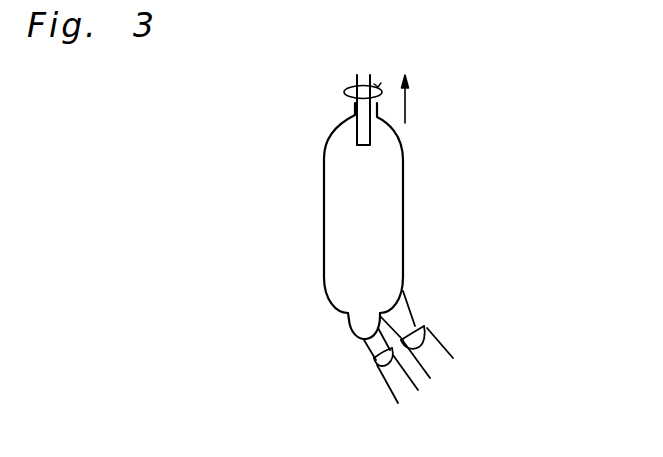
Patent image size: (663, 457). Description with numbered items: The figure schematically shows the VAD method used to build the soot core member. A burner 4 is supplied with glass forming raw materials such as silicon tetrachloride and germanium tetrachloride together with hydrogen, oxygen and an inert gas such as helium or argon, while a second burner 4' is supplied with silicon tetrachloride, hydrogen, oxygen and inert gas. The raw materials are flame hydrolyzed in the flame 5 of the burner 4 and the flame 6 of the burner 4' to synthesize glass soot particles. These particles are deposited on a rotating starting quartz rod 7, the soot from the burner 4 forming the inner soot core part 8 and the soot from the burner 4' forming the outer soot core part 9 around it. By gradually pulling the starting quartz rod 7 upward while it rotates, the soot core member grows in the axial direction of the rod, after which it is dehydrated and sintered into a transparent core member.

The starting quartz rod 7 is at (358, 105).
The outer soot core part 9 is at (337, 291).
The inner soot core part 8 is at (352, 331).
The flame 5 is at (373, 353).
The flame 6 is at (406, 303).
The burner 4 is at (362, 391).
The burner 4' is at (465, 342).